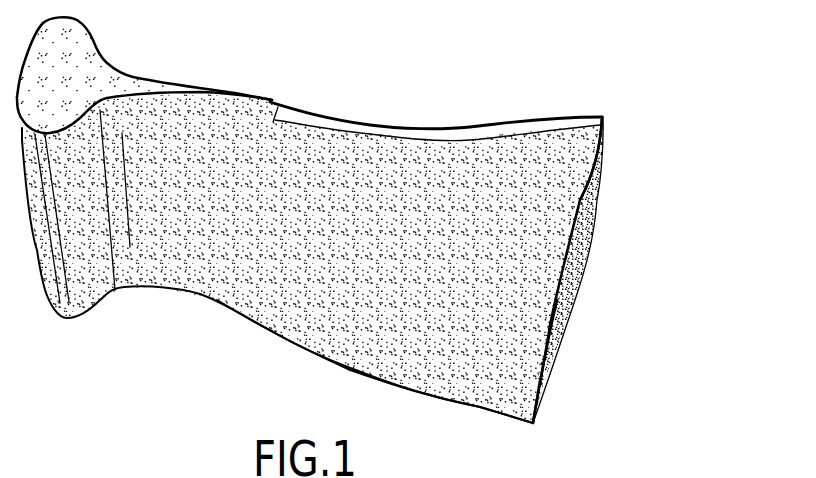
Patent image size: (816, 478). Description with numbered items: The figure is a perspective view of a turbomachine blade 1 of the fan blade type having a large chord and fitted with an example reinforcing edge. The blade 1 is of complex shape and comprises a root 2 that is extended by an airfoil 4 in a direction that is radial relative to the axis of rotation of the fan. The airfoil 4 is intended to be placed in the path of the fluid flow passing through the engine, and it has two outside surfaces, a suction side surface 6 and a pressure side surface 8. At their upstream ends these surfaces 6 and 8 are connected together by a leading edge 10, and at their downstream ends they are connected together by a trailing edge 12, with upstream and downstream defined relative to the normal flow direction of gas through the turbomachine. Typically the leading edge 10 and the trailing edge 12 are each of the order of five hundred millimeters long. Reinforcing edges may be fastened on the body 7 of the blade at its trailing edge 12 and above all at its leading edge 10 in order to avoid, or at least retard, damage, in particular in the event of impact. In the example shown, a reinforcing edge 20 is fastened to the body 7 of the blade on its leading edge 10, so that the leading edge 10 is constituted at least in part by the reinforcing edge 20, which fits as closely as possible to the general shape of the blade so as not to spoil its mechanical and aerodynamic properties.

The turbomachine blade 1 is at (516, 70).
The root 2 is at (70, 60).
The airfoil 4 is at (242, 260).
The suction side surface 6 is at (523, 250).
The body 7 is at (553, 175).
The pressure side surface 8 is at (503, 310).
The leading edge 10 is at (336, 115).
The trailing edge 12 is at (330, 360).
The reinforcing edge 20 is at (440, 137).